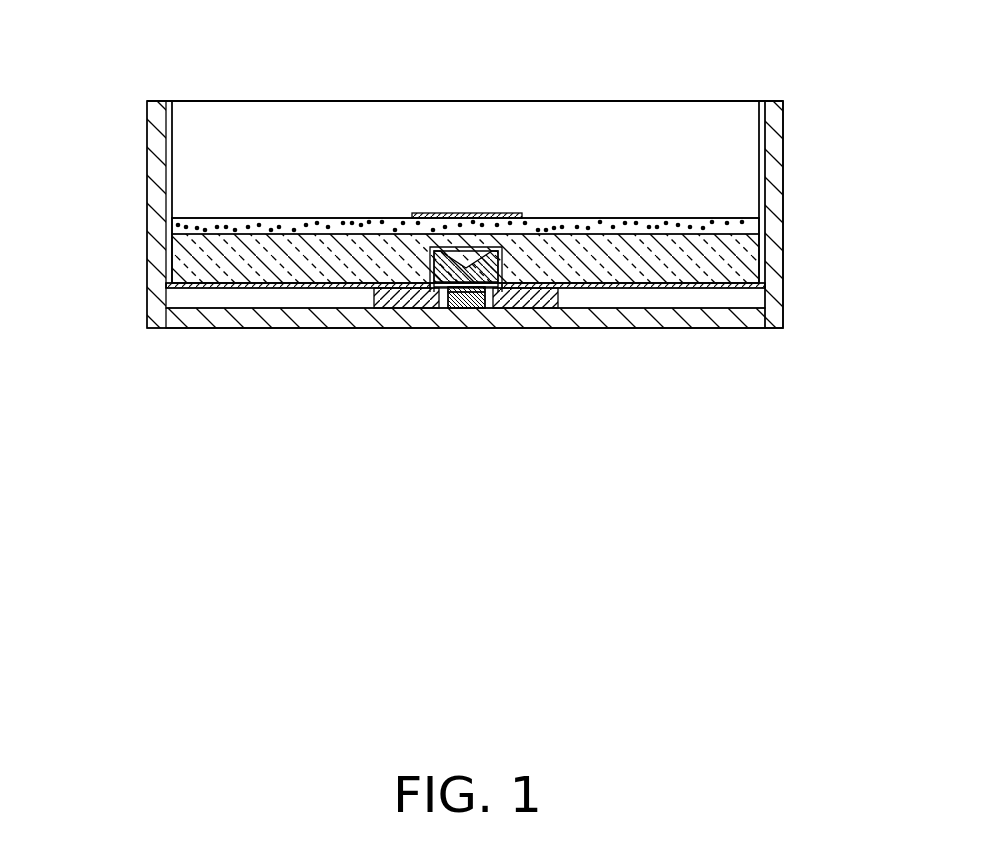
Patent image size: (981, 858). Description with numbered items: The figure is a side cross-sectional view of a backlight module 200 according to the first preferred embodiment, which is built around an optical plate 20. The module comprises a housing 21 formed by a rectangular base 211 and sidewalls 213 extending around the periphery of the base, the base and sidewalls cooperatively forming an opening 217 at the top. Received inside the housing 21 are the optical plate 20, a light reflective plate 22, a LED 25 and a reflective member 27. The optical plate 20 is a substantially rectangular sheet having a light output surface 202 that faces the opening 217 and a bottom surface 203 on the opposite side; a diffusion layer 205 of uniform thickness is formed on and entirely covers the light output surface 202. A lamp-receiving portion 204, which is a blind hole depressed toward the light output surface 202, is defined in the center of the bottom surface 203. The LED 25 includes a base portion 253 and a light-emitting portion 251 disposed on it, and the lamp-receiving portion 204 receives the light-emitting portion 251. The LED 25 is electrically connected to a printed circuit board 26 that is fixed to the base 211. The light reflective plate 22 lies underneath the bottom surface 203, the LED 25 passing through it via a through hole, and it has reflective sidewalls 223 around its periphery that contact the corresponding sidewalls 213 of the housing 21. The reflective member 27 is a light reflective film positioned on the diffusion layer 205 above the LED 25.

The backlight module 200 is at (390, 88).
The optical plate 20 is at (60, 205).
The housing 21 is at (857, 280).
The light reflective plate 22 is at (268, 286).
The LED 25 is at (542, 385).
The printed circuit board 26 is at (545, 303).
The reflective member 27 is at (428, 214).
The light output surface 202 is at (196, 237).
The bottom surface 203 is at (211, 289).
The lamp-receiving portion 204 is at (468, 265).
The diffusion layer 205 is at (180, 222).
The base 211 is at (697, 322).
The sidewalls 213 is at (773, 297).
The opening 217 is at (672, 155).
The reflective sidewalls 223 is at (762, 160).
The light-emitting portion 251 is at (492, 298).
The base portion 253 is at (462, 300).